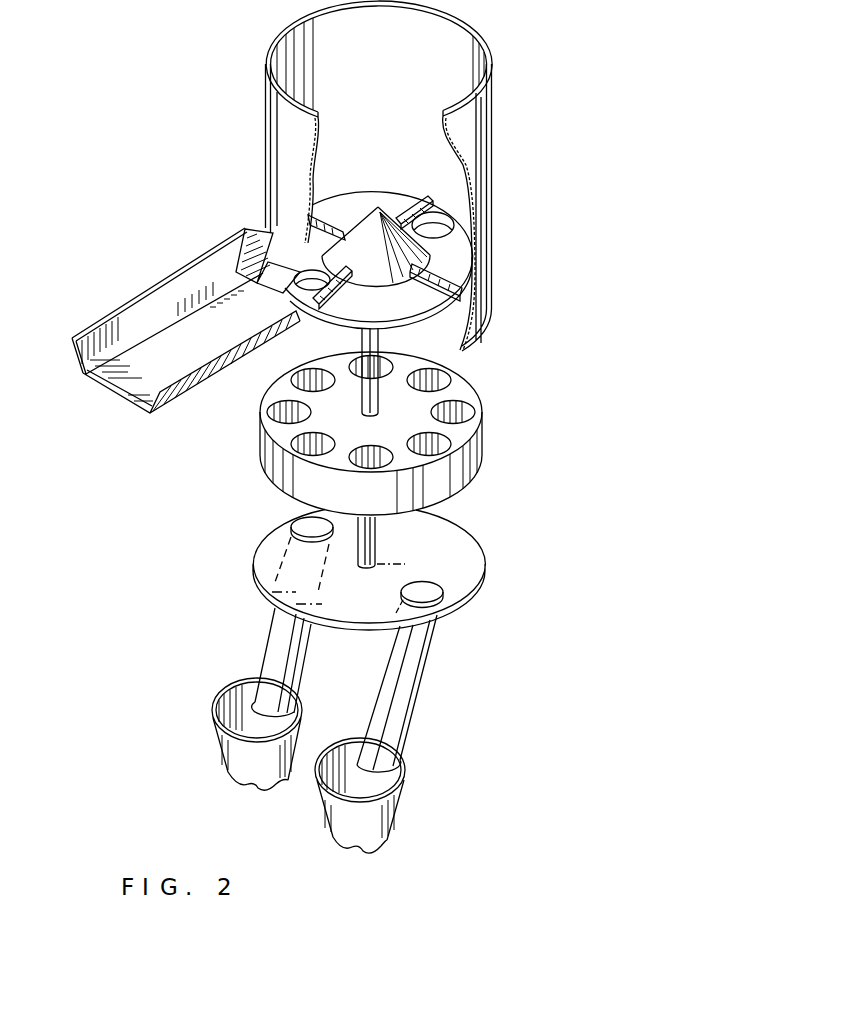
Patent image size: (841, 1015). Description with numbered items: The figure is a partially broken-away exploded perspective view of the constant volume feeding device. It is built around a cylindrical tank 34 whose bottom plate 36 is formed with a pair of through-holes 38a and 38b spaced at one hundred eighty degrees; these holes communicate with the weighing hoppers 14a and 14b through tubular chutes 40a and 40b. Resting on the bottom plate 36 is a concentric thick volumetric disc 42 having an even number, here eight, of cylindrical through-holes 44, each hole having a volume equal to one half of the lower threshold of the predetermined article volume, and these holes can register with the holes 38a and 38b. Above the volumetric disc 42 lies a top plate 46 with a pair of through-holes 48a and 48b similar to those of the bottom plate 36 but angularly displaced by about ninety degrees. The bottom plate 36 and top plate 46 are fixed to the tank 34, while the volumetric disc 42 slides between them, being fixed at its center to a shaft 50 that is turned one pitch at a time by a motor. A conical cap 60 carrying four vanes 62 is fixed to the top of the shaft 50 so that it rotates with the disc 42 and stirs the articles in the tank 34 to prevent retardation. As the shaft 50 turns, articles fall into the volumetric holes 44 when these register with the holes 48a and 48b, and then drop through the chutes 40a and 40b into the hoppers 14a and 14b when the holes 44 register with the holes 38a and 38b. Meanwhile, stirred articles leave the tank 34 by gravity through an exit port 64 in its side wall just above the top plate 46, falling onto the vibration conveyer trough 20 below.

The weighing hopper 14a is at (400, 793).
The weighing hopper 14b is at (218, 738).
The vibration conveyer trough 20 is at (160, 300).
The cylindrical tank 34 is at (491, 128).
The bottom plate 36 is at (465, 543).
The through-hole 38a is at (447, 590).
The through-hole 38b is at (297, 525).
The tubular chute 40a is at (413, 690).
The tubular chute 40b is at (273, 643).
The volumetric disc 42 is at (482, 443).
The cylindrical through-holes 44 is at (467, 410).
The top plate 46 is at (455, 267).
The through-hole 48a is at (443, 227).
The through-hole 48b is at (312, 292).
The shaft 50 is at (382, 338).
The conical cap 60 is at (363, 222).
The vanes 62 is at (410, 198).
The exit port 64 is at (258, 230).